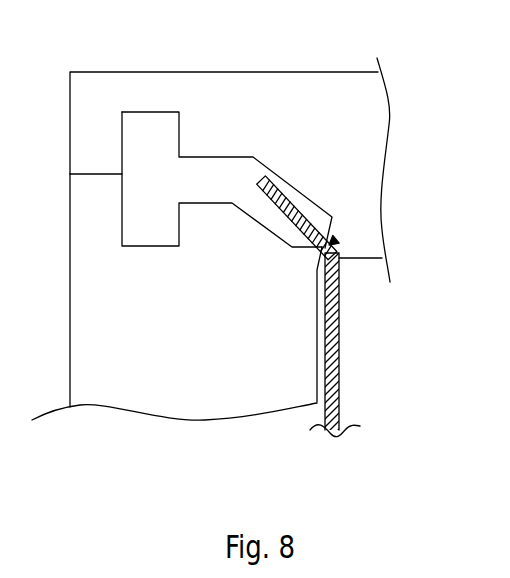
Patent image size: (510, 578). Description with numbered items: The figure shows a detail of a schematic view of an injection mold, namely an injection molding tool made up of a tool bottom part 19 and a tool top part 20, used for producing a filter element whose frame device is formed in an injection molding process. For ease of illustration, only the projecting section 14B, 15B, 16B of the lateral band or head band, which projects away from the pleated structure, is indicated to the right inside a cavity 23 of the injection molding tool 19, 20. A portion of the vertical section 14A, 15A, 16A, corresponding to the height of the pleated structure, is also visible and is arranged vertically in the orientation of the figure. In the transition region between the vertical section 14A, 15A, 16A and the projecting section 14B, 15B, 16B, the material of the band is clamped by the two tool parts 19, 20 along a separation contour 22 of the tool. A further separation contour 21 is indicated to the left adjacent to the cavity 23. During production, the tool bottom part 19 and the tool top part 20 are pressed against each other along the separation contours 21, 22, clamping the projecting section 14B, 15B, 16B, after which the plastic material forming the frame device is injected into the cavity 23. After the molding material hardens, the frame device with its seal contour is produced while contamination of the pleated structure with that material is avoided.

The vertical section of lateral band or head band 14A is at (386, 348).
The vertical section of lateral band or head band 15A is at (386, 348).
The vertical section of lateral band or head band 16A is at (330, 363).
The projecting section of lateral band or head band 14B is at (308, 182).
The projecting section of lateral band or head band 15B is at (308, 182).
The projecting section of lateral band or head band 16B is at (288, 184).
The tool bottom part 19 is at (160, 387).
The tool top part 20 is at (288, 82).
The further separation contour 21 is at (112, 173).
The separation contour 22 is at (334, 241).
The cavity 23 is at (163, 191).